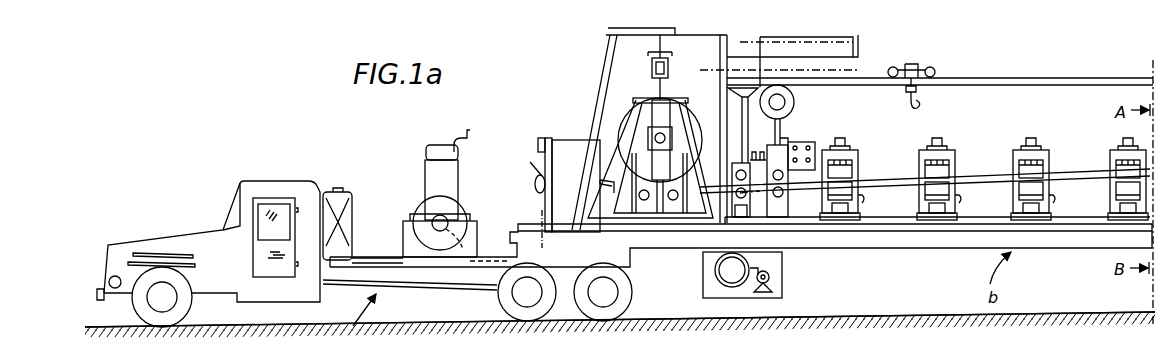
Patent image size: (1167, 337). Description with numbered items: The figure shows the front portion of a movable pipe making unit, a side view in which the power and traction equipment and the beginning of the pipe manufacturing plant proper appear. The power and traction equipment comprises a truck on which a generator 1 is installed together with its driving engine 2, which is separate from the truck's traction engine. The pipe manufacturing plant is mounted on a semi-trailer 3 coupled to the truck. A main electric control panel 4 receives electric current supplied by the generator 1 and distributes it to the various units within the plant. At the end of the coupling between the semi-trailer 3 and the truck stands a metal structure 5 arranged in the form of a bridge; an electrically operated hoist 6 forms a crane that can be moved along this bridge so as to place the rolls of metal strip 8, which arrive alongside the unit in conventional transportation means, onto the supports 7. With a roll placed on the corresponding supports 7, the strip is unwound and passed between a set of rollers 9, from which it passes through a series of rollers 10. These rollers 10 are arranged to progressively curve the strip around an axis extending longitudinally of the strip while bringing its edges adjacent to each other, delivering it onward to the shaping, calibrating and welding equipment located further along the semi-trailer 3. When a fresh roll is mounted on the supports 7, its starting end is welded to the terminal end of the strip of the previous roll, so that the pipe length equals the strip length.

The generator 1 is at (455, 217).
The driving engine 2 is at (454, 180).
The semi-trailer 3 is at (653, 240).
The main electric control panel 4 is at (544, 146).
The metal structure 5 is at (610, 33).
The electrically operated hoist 6 is at (651, 68).
The supports 7 is at (633, 138).
The rolls of metal strip 8 is at (633, 117).
The set of rollers 9 is at (745, 198).
The series of rollers 10 is at (1020, 172).